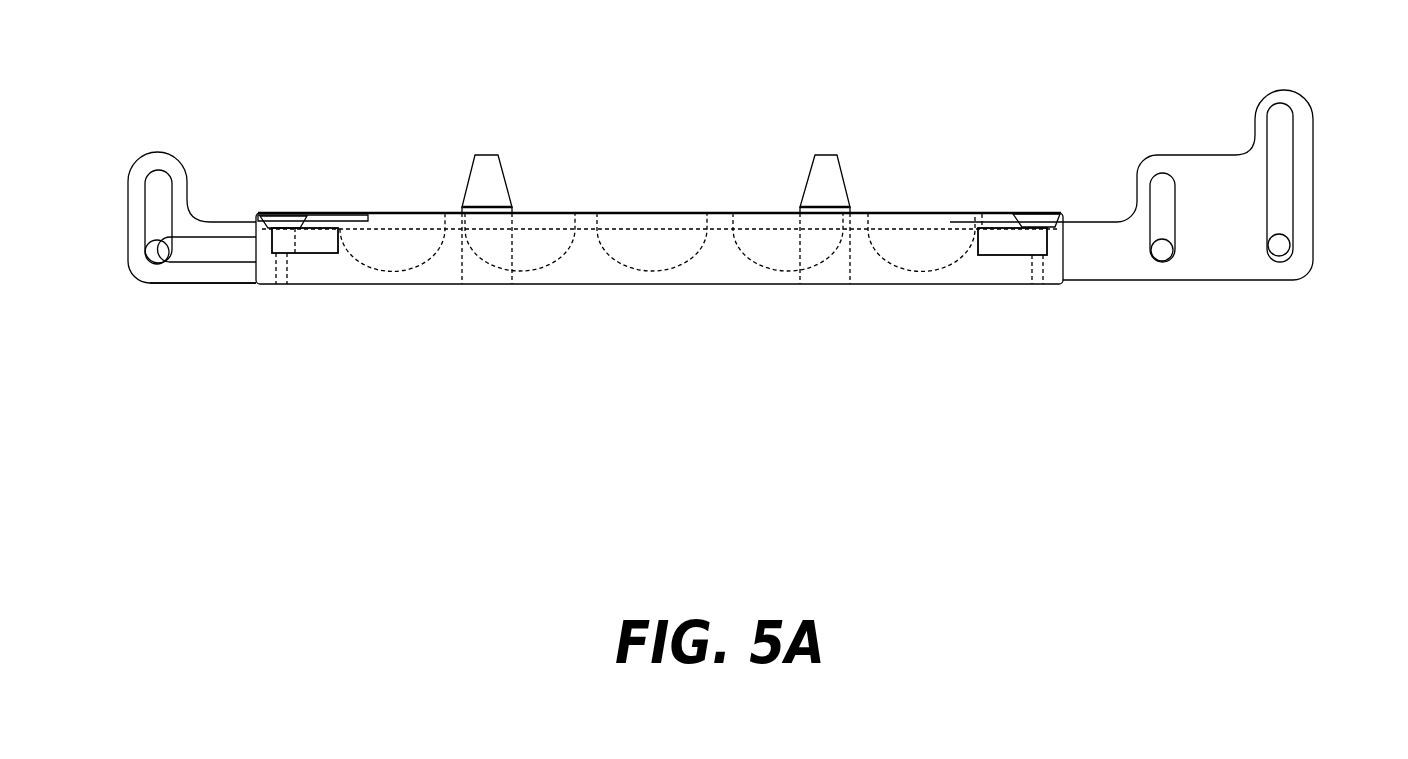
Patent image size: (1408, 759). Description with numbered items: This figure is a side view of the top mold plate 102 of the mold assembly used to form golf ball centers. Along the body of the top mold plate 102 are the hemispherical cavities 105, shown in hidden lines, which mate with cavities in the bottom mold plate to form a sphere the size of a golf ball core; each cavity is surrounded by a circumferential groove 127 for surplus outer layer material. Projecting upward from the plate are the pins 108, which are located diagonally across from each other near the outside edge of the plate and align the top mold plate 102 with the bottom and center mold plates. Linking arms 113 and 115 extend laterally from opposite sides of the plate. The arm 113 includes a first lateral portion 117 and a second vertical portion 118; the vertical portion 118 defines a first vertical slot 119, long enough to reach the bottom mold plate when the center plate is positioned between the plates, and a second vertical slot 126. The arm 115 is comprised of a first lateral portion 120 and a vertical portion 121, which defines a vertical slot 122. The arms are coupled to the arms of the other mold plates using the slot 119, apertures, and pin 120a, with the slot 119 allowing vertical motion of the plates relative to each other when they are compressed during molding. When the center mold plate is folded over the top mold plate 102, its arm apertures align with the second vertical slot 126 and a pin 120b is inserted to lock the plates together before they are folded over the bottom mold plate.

The top mold plate 102 is at (815, 83).
The cavities 105 is at (375, 215).
The pins 108 is at (510, 195).
The linking arms 113 is at (1212, 270).
The linking arms 115 is at (198, 218).
The first lateral portion 117 is at (1107, 270).
The second vertical portion 118 is at (1313, 177).
The first vertical slot 119 is at (1278, 142).
The first lateral portion 120 is at (222, 272).
The pin 120a is at (145, 258).
The pin 120b is at (1162, 262).
The vertical portion 121 is at (132, 217).
The vertical slot 122 is at (158, 192).
The second vertical slot 126 is at (1158, 215).
The circumferential groove 127 is at (460, 215).